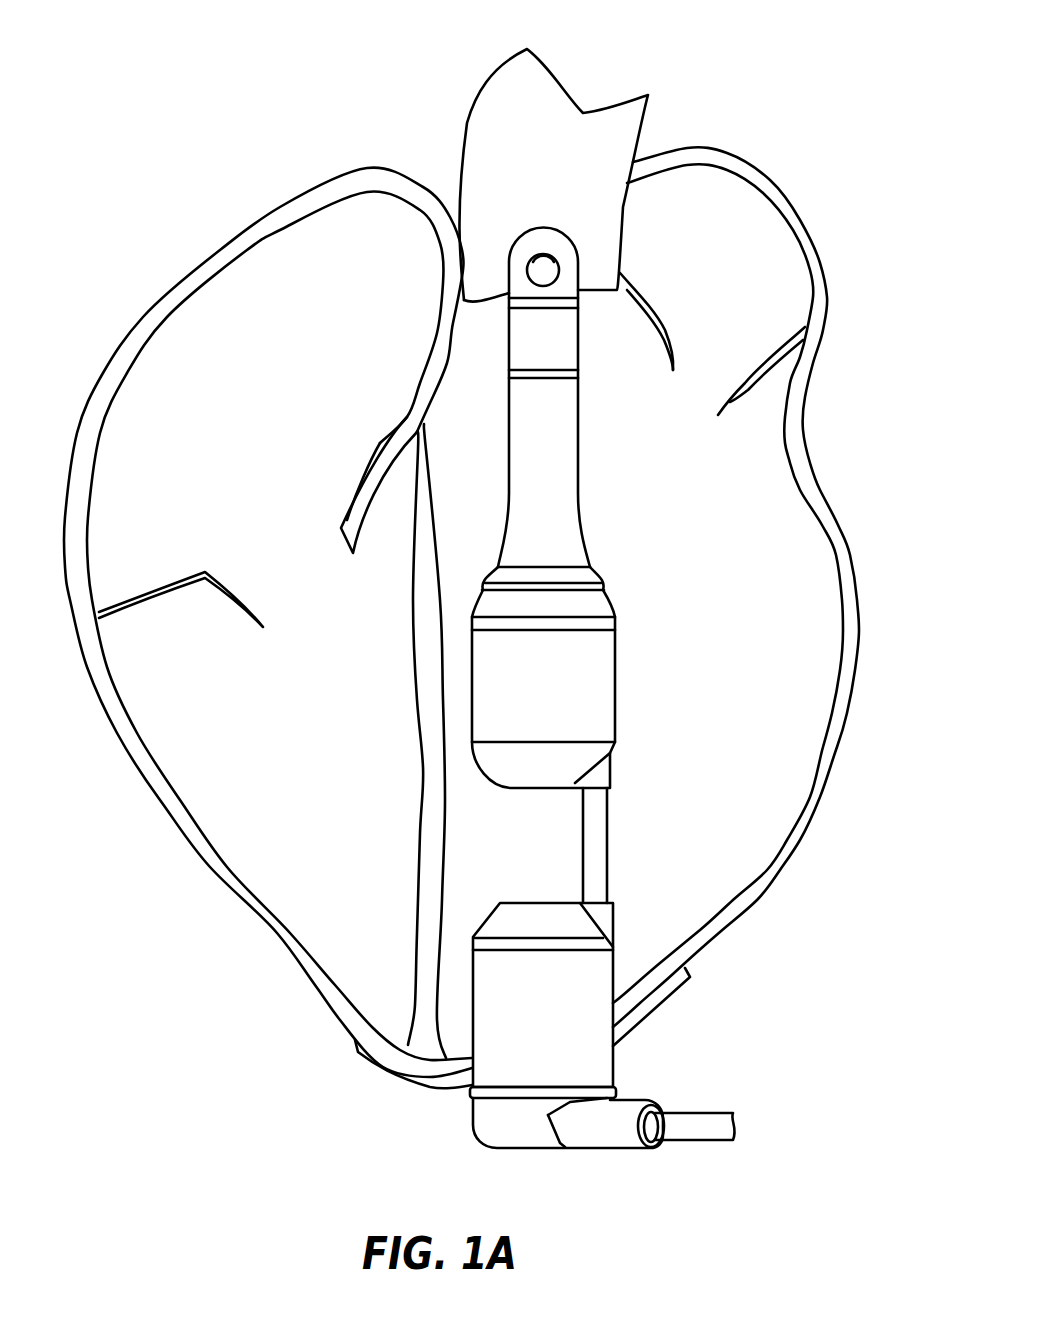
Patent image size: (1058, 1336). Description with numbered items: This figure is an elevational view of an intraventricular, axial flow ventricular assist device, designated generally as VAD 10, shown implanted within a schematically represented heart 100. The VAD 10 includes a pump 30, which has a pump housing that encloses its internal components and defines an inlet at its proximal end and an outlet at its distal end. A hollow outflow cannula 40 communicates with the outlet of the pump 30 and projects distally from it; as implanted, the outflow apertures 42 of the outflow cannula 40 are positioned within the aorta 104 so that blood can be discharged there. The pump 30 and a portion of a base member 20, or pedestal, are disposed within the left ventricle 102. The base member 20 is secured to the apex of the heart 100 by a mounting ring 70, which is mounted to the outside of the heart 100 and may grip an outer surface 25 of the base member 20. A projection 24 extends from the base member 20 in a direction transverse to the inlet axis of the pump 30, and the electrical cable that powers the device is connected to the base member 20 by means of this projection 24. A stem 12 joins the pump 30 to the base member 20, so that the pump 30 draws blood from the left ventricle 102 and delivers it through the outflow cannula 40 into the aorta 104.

The VAD 10 is at (523, 716).
The stem / connecting tube 12 is at (598, 843).
The base member 20 is at (608, 982).
The projection 24 is at (697, 1137).
The outer surface 25 is at (585, 1065).
The pump 30 is at (619, 609).
The outflow cannula 40 is at (586, 488).
The outflow apertures 42 is at (550, 262).
The mounting ring 70 is at (677, 993).
The heart 100 is at (461, 563).
The left ventricle 102 is at (670, 755).
The aorta 104 is at (506, 153).